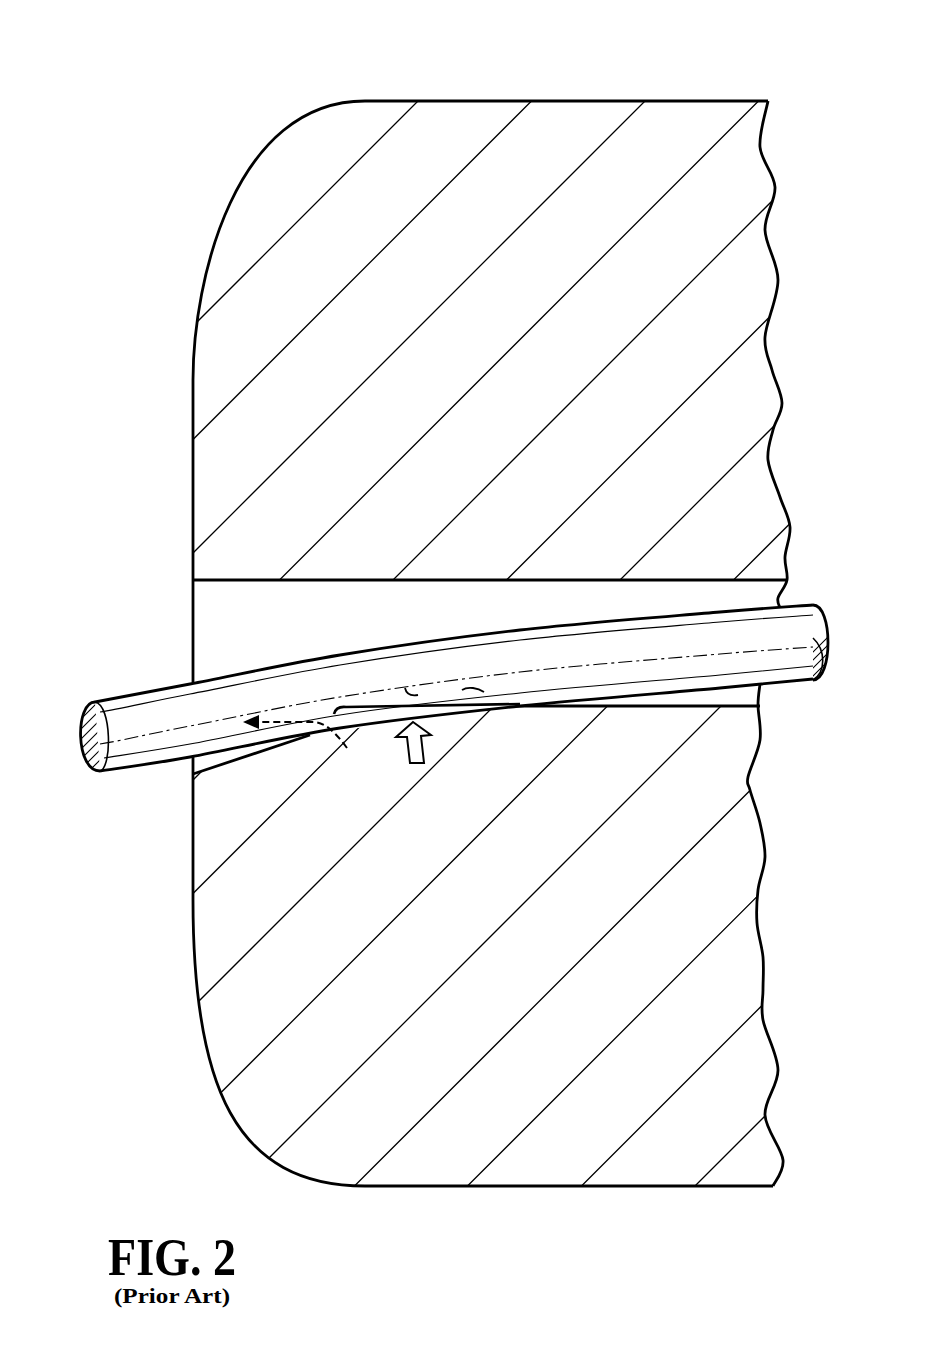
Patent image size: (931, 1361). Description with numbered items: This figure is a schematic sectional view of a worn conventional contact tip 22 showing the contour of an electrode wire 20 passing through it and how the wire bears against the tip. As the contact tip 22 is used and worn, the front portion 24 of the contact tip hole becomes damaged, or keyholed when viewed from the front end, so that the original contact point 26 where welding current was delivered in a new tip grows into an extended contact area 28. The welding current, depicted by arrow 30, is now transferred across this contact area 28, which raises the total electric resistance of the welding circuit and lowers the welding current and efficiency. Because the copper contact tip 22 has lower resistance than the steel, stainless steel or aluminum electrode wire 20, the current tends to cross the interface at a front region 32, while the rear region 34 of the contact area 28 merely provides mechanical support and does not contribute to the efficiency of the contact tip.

The electrode wire 20 is at (781, 665).
The contact tip 22 is at (392, 100).
The front portion of the contact tip hole 24 is at (193, 798).
The contact point 26 is at (432, 745).
The contact area 28 is at (405, 688).
The arrow 30 is at (348, 755).
The front region 32 is at (365, 727).
The rear region 34 is at (457, 714).